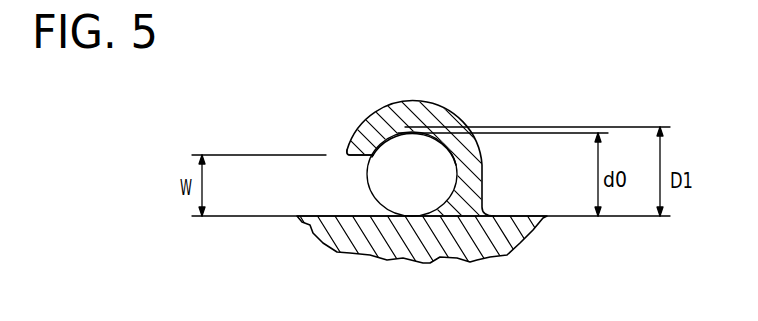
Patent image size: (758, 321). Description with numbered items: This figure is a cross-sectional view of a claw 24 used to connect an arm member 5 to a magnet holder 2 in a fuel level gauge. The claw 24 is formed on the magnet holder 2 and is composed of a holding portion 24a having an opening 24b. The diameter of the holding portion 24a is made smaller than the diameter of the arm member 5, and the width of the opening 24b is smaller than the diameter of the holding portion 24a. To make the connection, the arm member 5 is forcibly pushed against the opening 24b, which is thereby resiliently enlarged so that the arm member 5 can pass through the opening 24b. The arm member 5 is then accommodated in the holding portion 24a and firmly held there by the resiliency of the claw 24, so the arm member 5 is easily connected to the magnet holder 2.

The magnet holder 2 is at (317, 214).
The arm member 5 is at (370, 186).
The claw 24 is at (451, 108).
The holding portion 24a is at (407, 138).
The opening 24b is at (336, 157).